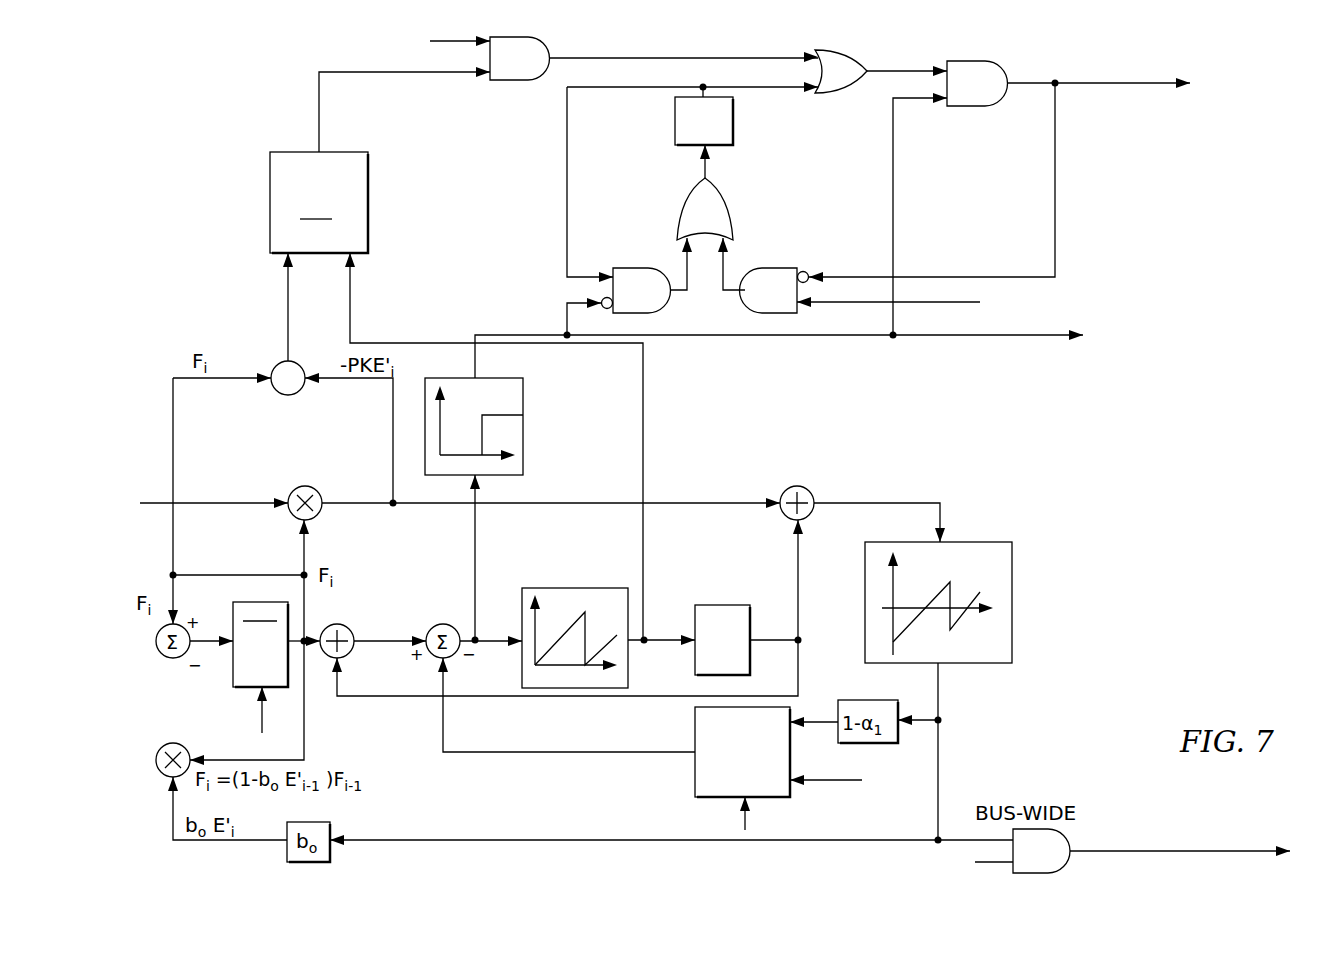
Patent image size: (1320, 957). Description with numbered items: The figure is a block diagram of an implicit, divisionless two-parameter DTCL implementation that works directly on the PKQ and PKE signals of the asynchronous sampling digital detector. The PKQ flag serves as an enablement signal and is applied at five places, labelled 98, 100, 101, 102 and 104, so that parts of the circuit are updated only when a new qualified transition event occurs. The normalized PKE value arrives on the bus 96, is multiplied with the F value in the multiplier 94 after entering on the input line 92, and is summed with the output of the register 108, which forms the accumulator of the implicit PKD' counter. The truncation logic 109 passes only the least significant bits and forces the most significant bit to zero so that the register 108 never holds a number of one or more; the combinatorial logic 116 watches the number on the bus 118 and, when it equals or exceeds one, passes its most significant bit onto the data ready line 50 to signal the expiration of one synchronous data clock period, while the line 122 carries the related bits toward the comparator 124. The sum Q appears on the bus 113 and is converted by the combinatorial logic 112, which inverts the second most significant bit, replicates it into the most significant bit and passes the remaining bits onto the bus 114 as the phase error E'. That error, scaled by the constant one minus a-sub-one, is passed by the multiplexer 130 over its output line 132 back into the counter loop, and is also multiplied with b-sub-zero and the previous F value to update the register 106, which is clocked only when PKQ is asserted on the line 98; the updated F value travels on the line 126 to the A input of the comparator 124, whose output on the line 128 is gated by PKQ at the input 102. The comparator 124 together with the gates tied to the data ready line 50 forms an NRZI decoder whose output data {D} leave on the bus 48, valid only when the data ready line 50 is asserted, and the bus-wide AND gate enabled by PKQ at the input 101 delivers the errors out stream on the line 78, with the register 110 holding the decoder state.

The bus 48 is at (1068, 86).
The data ready line 50 is at (903, 338).
The errors out line 78 is at (1088, 853).
The PKE input line 92 is at (228, 503).
The multiplier 94 is at (317, 490).
The bus 96 is at (350, 510).
The PKQ input line 98 is at (262, 719).
The PKQ input 100 is at (737, 823).
The PKQ input 101 is at (985, 865).
The PKQ input 102 is at (447, 38).
The PKQ input 104 is at (912, 303).
The register 106 is at (260, 644).
The register 108 is at (727, 605).
The truncation logic 109 is at (628, 606).
The D register 110 is at (733, 117).
The combinatorial logic 112 is at (1012, 580).
The bus 113 is at (941, 510).
The bus 114 is at (938, 777).
The combinatorial logic 116 is at (523, 425).
The bus 118 is at (475, 533).
The comparator B input line 122 is at (643, 410).
The comparator 124 is at (319, 202).
The comparator A input line 126 is at (287, 312).
The comparator output line 128 is at (319, 125).
The multiplexer 130 is at (695, 768).
The multiplexer output line 132 is at (468, 752).